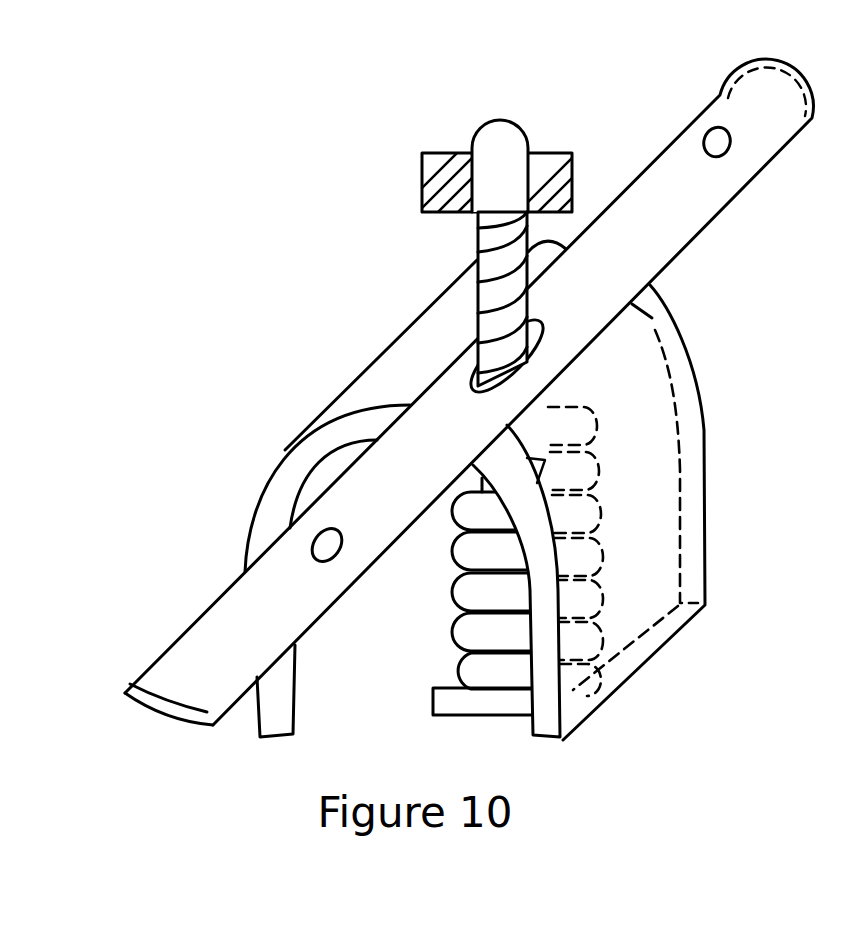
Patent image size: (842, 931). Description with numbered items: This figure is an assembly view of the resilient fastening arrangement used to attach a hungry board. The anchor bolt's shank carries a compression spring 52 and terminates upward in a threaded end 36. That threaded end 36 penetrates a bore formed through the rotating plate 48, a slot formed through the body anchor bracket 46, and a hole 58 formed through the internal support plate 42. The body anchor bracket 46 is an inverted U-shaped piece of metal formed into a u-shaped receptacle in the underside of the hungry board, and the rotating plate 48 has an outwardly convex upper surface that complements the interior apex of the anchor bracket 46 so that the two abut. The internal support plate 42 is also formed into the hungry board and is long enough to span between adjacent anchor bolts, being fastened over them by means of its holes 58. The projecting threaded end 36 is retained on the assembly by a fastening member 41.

The threaded end 36 is at (500, 140).
The fastening member 41 is at (440, 187).
The internal support plate 42 is at (230, 630).
The body anchor bracket 46 is at (705, 477).
The rotating plate 48 is at (565, 383).
The compression spring 52 is at (587, 640).
The hole 58 is at (714, 140).